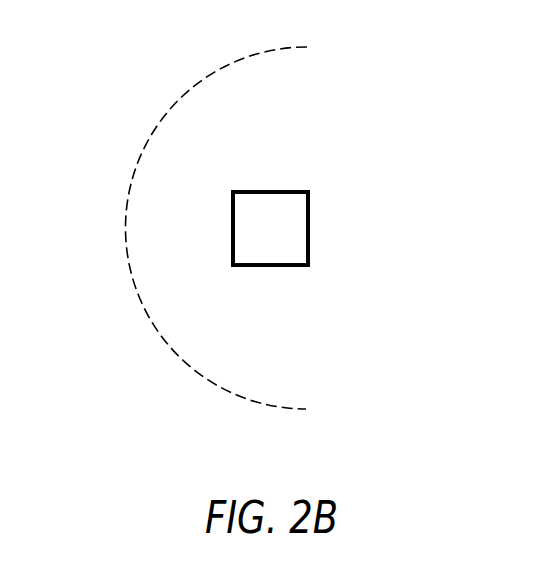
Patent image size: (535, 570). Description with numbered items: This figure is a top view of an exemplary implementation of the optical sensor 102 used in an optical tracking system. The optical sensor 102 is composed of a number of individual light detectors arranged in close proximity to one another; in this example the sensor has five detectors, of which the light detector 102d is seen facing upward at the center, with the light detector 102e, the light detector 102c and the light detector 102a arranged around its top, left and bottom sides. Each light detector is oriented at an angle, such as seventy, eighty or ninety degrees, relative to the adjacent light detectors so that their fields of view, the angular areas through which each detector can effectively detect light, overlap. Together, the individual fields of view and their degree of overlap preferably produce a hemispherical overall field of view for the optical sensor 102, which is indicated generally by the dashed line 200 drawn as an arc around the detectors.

The dashed line 200 is at (128, 230).
The optical sensor 102 is at (415, 138).
The light detector 102d is at (297, 240).
The light detector 102e is at (271, 192).
The light detector 102c is at (233, 227).
The light detector 102a is at (270, 265).